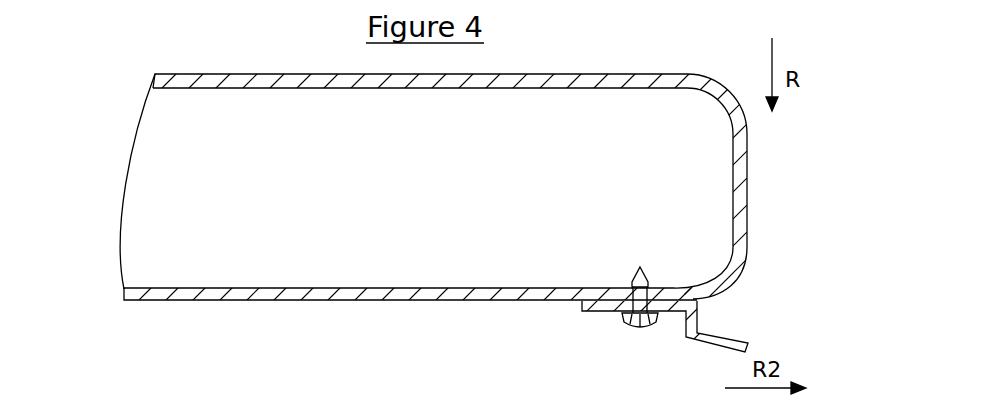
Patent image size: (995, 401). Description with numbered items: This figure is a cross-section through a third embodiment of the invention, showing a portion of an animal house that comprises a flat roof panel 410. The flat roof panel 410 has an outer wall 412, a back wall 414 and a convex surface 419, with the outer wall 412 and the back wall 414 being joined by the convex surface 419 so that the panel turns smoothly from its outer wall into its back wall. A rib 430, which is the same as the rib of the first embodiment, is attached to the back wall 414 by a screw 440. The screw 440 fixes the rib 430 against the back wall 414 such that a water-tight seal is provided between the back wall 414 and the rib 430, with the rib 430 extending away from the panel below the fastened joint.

The flat roof panel 410 is at (713, 133).
The outer wall 412 is at (742, 195).
The convex surface 419 is at (728, 276).
The back wall 414 is at (124, 297).
The screw 440 is at (685, 298).
The rib 430 is at (747, 342).